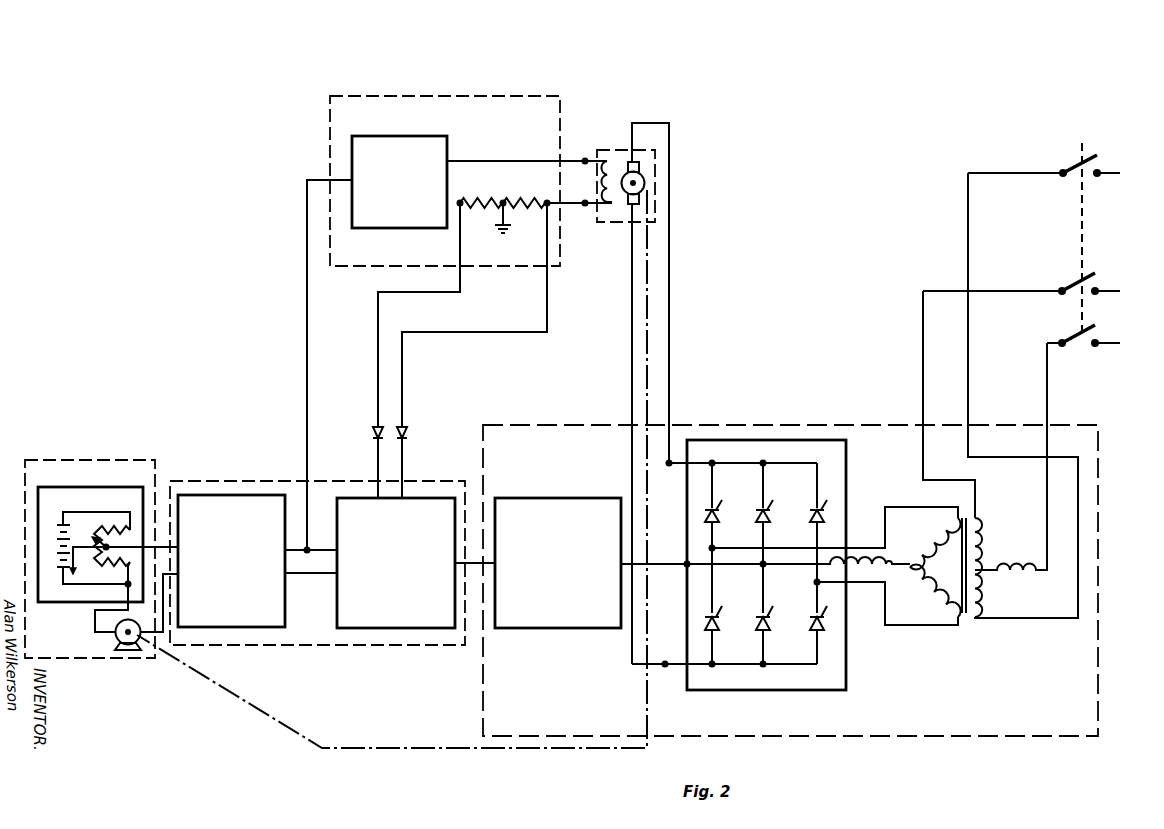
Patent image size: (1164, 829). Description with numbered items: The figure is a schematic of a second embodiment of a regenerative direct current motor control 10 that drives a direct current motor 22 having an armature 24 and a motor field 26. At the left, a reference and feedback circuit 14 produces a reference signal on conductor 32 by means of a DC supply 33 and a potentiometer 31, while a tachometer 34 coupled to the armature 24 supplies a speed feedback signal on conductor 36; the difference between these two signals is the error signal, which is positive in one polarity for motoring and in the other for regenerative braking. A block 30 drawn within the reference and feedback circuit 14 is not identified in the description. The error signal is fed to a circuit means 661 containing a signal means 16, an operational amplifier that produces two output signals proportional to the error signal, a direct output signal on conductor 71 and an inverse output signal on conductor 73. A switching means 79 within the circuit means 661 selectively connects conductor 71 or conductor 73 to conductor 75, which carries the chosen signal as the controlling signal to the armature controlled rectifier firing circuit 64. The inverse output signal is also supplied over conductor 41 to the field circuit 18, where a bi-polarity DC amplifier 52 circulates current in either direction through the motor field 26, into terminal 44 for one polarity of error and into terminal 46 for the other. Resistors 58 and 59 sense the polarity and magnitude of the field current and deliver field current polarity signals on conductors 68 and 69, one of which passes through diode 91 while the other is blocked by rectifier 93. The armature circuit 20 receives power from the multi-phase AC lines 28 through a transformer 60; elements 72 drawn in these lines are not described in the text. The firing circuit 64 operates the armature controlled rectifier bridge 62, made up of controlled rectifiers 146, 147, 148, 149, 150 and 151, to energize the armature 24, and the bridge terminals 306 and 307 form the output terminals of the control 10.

The control 10 is at (192, 340).
The reference and feedback circuit 14 is at (82, 459).
The signal means 16 is at (237, 495).
The field circuit 18 is at (438, 96).
The armature circuit 20 is at (908, 737).
The direct current motor 22 is at (627, 222).
The armature 24 is at (641, 185).
The motor field 26 is at (609, 161).
The multi-phase AC lines 28 is at (1100, 342).
The reference voltage source 30 is at (92, 488).
The potentiometer 31 is at (100, 550).
The conductor 32 is at (163, 546).
The DC supply 33 is at (60, 523).
The tachometer 34 is at (115, 637).
The conductor 36 is at (172, 575).
The conductor 41 is at (307, 335).
The terminal 44 is at (585, 158).
The terminal 46 is at (585, 207).
The bi-polarity DC amplifier 52 is at (400, 136).
The resistor 58 is at (488, 199).
The resistor 59 is at (542, 201).
The transformer 60 is at (965, 616).
The armature controlled rectifier bridge 62 is at (846, 673).
The armature controlled rectifier firing circuit 64 is at (577, 630).
The circuit means 661 is at (422, 647).
The conductor 68 is at (510, 332).
The conductor 69 is at (448, 292).
The conductor 71 is at (317, 576).
The line switches 72 is at (1065, 338).
The conductor 73 is at (311, 548).
The conductor 75 is at (472, 562).
The switching means 79 is at (337, 623).
The diode 91 is at (408, 428).
The rectifier 93 is at (372, 428).
The controlled rectifier 146 is at (716, 521).
The controlled rectifier 147 is at (716, 629).
The controlled rectifier 148 is at (769, 521).
The controlled rectifier 149 is at (768, 630).
The controlled rectifier 150 is at (813, 516).
The controlled rectifier 151 is at (814, 622).
The bridge terminal 306 is at (669, 463).
The bridge terminal 307 is at (665, 667).